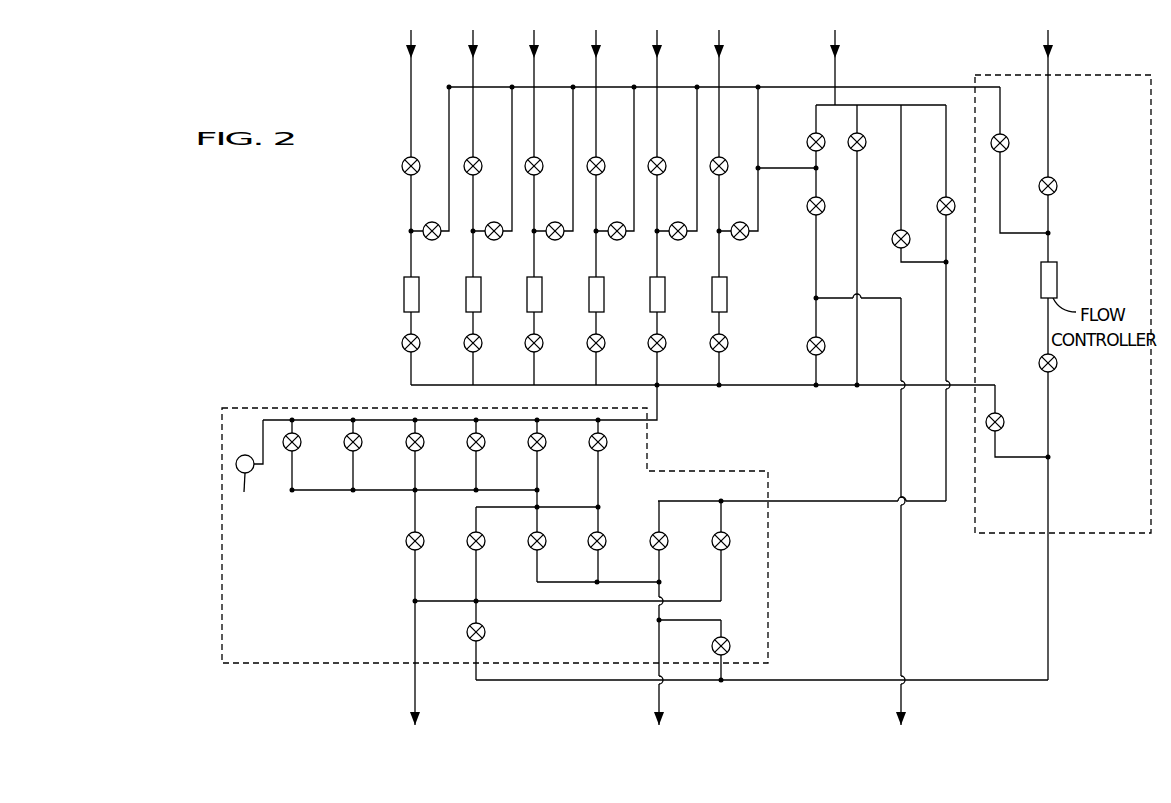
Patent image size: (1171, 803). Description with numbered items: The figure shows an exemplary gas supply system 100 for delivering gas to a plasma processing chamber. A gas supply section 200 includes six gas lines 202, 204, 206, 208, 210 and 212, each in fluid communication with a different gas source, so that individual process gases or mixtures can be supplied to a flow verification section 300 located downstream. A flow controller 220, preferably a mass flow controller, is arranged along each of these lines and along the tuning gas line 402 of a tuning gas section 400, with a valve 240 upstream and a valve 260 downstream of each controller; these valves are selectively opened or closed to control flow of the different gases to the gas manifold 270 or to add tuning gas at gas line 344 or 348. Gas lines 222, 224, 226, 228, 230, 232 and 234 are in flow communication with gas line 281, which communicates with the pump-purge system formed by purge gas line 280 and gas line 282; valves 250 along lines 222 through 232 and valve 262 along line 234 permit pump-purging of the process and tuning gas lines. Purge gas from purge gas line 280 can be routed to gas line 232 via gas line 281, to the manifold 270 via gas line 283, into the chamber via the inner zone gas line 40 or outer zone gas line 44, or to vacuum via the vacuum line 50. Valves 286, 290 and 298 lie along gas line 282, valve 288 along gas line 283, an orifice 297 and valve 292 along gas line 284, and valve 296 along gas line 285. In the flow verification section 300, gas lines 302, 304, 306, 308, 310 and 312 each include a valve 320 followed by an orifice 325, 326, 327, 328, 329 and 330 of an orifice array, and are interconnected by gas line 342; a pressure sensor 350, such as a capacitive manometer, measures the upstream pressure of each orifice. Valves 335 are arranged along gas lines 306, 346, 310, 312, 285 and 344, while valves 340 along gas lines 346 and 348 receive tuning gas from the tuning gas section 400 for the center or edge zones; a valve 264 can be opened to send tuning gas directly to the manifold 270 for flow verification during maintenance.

The gas supply system 100 is at (310, 252).
The gas supply section 200 is at (748, 47).
The gas line 202 is at (410, 75).
The gas line 204 is at (472, 75).
The gas line 206 is at (533, 75).
The gas line 208 is at (595, 75).
The gas line 210 is at (656, 75).
The gas line 212 is at (718, 75).
The gas line 222 is at (448, 143).
The gas line 224 is at (511, 143).
The gas line 226 is at (572, 143).
The gas line 228 is at (633, 143).
The gas line 230 is at (696, 143).
The gas line 232 is at (757, 143).
The gas line 234 is at (876, 86).
The valve 240 is at (418, 172).
The valve 250 is at (439, 238).
The flow controller 220 is at (403, 292).
The valve 260 is at (418, 349).
The valve 262 is at (1007, 148).
The valve 264 is at (1003, 422).
The gas manifold 270 is at (762, 388).
The purge gas line 280 is at (834, 79).
The gas line 281 is at (786, 167).
The gas line 282 is at (815, 258).
The gas line 283 is at (858, 255).
The gas line 284 is at (902, 148).
The gas line 285 is at (945, 245).
The valve 286 is at (823, 143).
The valve 288 is at (864, 143).
The valve 290 is at (823, 211).
The valve 292 is at (893, 243).
The valve 296 is at (938, 204).
The orifice 297 is at (900, 206).
The valve 298 is at (823, 351).
The flow verification section 300 is at (262, 407).
The gas line 302 is at (296, 426).
The gas line 304 is at (357, 426).
The gas line 306 is at (419, 426).
The gas line 308 is at (480, 426).
The gas line 310 is at (541, 426).
The gas line 312 is at (602, 426).
The valve 320 is at (300, 437).
The orifice 325 is at (286, 469).
The orifice 326 is at (347, 469).
The orifice 327 is at (409, 469).
The orifice 328 is at (470, 469).
The orifice 329 is at (531, 469).
The orifice 330 is at (592, 469).
The valve 335 is at (422, 546).
The valve 340 is at (483, 636).
The gas line 342 is at (321, 492).
The gas line 344 is at (556, 602).
The gas line 346 is at (505, 509).
The gas line 348 is at (712, 620).
The pressure sensor 350 is at (247, 468).
The tuning gas section 400 is at (1083, 535).
The tuning gas line 402 is at (1050, 117).
The inner zone gas line 40 is at (658, 638).
The outer zone gas line 44 is at (414, 632).
The vacuum line 50 is at (903, 588).